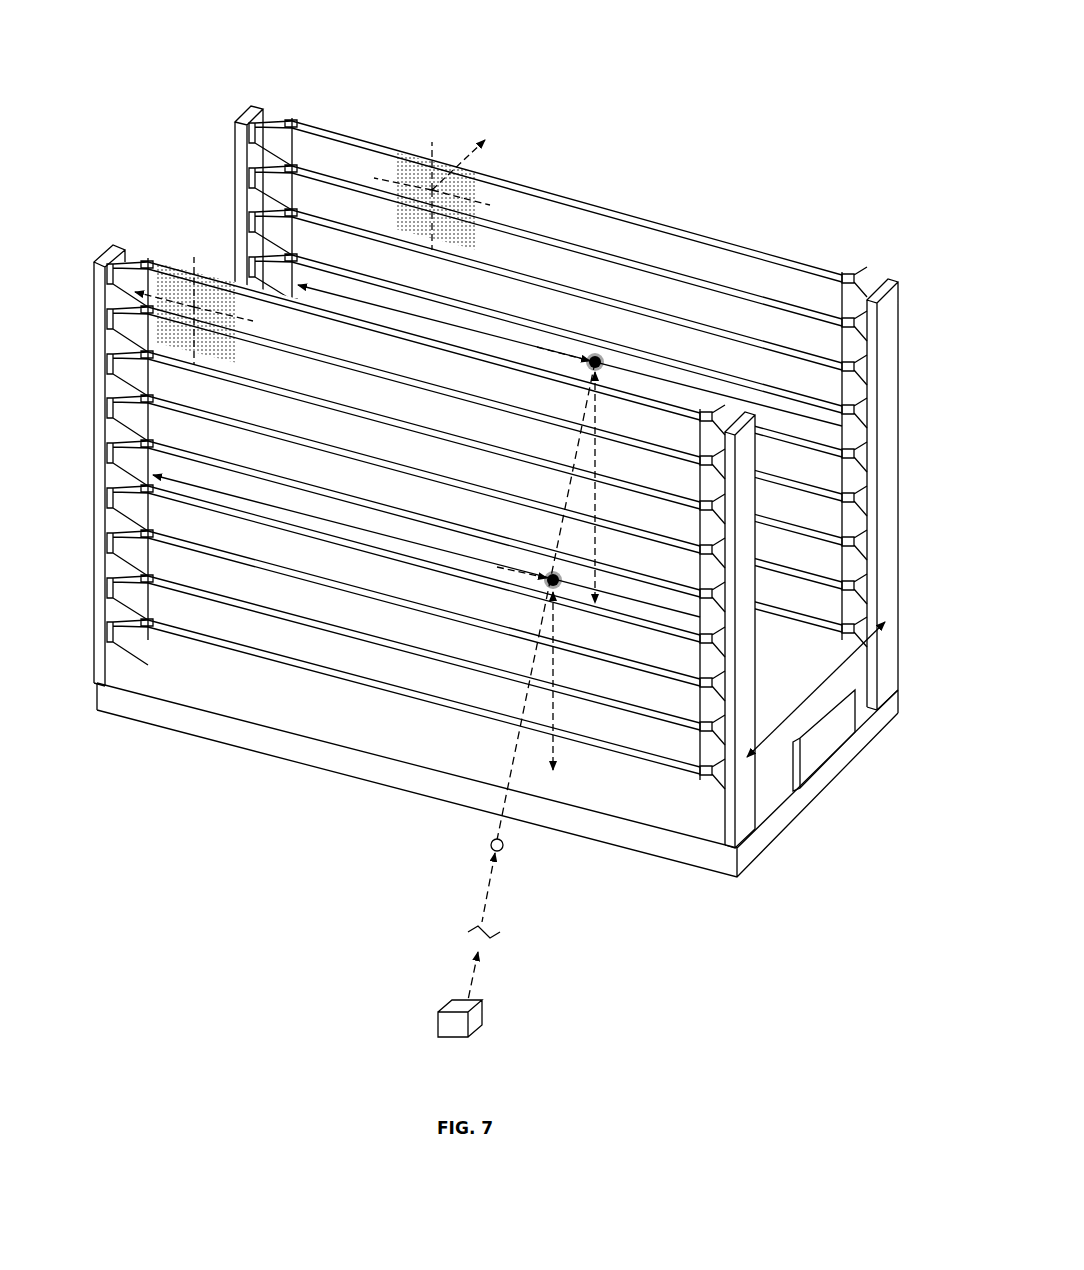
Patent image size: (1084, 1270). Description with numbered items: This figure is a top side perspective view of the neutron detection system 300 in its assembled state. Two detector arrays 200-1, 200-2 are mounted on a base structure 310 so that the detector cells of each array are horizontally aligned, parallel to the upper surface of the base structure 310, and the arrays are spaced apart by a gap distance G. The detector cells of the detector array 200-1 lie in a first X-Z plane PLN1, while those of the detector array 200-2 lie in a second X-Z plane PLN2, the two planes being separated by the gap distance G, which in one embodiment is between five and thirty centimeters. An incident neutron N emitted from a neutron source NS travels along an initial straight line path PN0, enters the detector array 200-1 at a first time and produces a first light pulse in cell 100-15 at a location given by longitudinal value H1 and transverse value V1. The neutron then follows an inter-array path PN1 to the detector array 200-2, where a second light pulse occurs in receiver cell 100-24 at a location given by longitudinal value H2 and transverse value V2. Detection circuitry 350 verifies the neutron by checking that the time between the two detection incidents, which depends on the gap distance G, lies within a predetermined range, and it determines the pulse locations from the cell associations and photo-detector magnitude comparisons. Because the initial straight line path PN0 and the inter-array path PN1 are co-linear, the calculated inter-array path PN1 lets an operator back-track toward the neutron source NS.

The neutron detection system 300 is at (190, 56).
The base structure 310 is at (798, 815).
The detection circuitry 350 is at (829, 738).
The gap distance G is at (773, 730).
The detector array 200-1 is at (150, 245).
The detector array 200-2 is at (753, 231).
The cell 100-15 is at (685, 615).
The receiver cell 100-24 is at (830, 431).
The first X-Z plane PLN1 is at (161, 264).
The second X-Z plane PLN2 is at (400, 155).
The longitudinal value H1 is at (509, 567).
The longitudinal value H2 is at (550, 350).
The transverse value V1 is at (556, 681).
The transverse value V2 is at (593, 487).
The inter-array path PN1 is at (573, 461).
The initial straight line path PN0 is at (488, 876).
The incident neutron N is at (505, 848).
The neutron source NS is at (448, 1000).